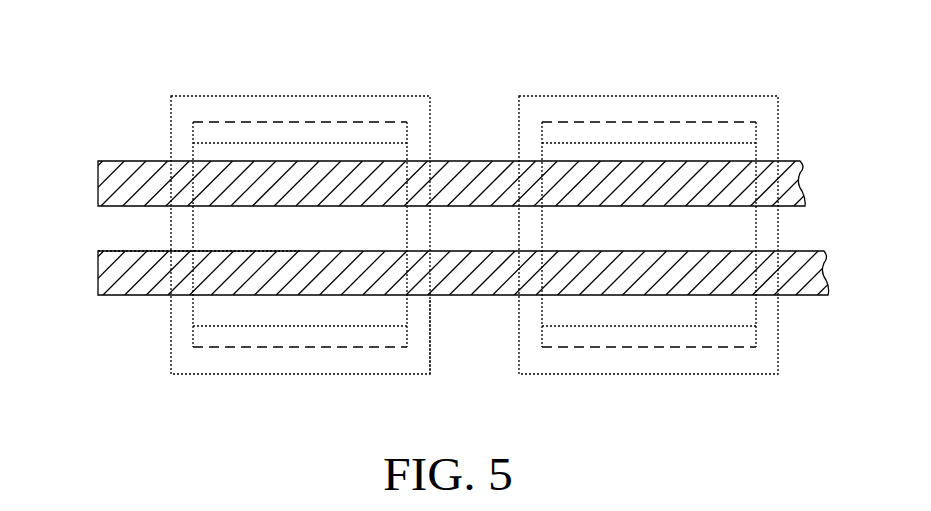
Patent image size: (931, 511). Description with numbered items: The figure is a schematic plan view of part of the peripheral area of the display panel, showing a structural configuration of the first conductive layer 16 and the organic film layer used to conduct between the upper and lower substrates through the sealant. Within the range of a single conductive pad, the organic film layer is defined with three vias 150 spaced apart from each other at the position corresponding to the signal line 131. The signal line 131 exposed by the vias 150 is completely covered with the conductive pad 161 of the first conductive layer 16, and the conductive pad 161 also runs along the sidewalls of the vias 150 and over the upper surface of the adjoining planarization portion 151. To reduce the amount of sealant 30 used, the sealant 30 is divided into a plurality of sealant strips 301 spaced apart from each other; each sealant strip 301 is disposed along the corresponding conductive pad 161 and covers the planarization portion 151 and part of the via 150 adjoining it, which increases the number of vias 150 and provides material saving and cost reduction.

The first conductive layer 16 is at (213, 374).
The via 150 is at (417, 270).
The planarization portion 151 is at (430, 345).
The signal line 131 is at (337, 347).
The conductive pad 161 is at (177, 265).
The sealant 30 is at (460, 166).
The sealant strip 301 is at (475, 250).